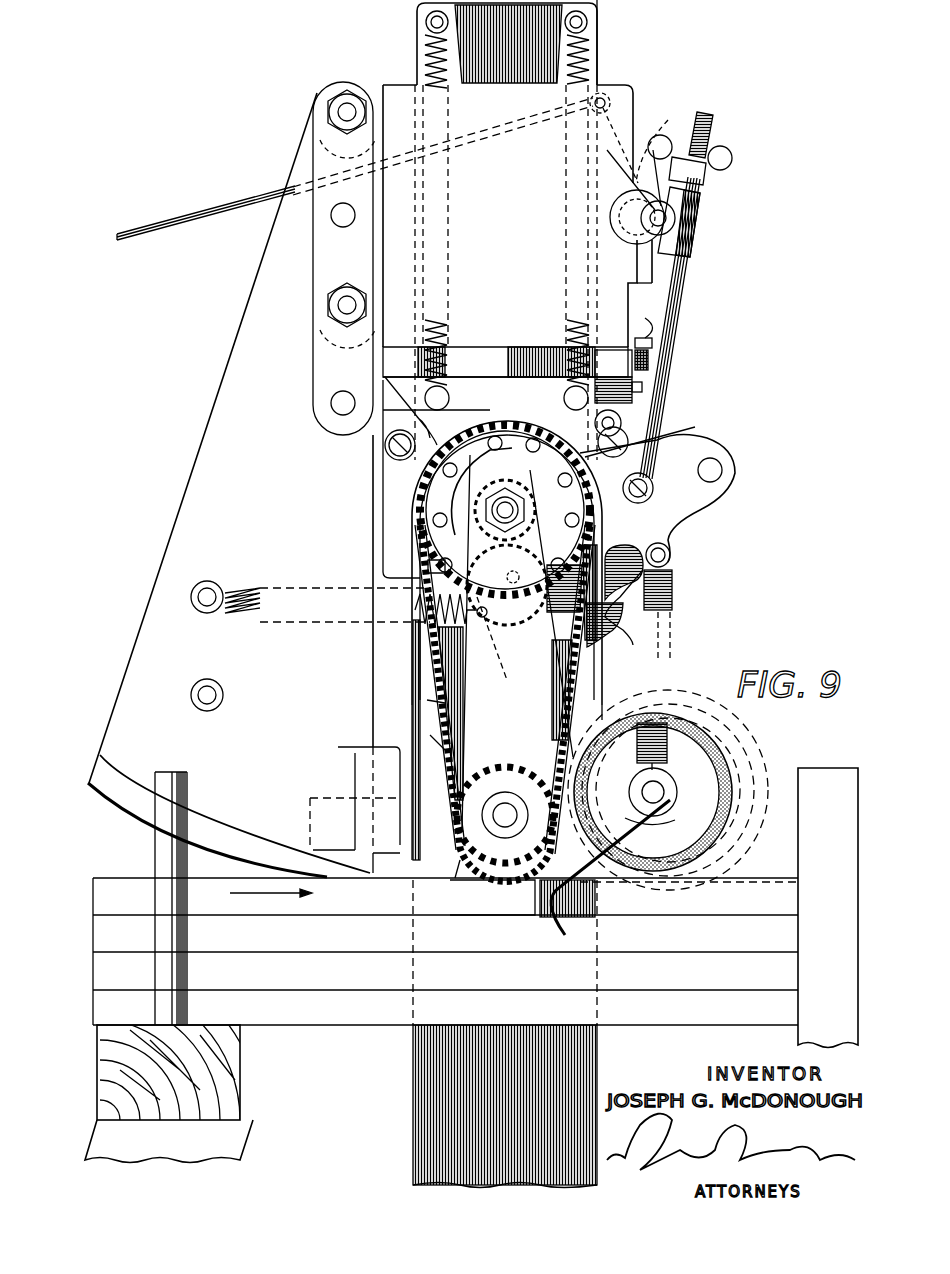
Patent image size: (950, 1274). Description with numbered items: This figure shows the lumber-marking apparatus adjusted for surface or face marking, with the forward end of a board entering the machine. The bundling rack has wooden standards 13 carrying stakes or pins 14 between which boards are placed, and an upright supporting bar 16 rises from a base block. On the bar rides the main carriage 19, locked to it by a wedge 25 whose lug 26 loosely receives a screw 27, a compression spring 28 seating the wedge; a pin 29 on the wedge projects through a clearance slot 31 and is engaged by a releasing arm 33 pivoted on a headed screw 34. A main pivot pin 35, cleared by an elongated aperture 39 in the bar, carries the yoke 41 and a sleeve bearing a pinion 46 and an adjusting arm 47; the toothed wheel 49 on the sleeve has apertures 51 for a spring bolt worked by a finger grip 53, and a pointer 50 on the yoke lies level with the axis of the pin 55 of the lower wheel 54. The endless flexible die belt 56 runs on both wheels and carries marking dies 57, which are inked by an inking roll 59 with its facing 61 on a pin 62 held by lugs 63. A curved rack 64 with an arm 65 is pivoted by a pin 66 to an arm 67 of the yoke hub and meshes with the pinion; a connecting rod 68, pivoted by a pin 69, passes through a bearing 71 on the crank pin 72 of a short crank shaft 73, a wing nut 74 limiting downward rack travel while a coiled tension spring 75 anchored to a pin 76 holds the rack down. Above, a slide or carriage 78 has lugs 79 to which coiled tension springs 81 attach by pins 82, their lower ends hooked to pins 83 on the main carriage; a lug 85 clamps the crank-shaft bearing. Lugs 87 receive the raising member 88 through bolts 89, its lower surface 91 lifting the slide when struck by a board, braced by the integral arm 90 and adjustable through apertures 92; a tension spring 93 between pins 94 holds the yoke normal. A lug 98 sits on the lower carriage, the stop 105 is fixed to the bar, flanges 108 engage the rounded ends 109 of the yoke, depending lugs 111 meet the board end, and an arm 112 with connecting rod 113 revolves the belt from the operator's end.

The wooden standards 13 is at (200, 1075).
The stakes or pins 14 is at (170, 850).
The upright supporting bar 16 is at (447, 1117).
The main carriage 19 is at (378, 438).
The wedge 25 is at (612, 385).
The lug 26 is at (643, 386).
The screw 27 is at (655, 321).
The compression spring 28 is at (649, 352).
The pin 29 is at (625, 452).
The clearance slot 31 is at (618, 430).
The releasing arm 33 is at (440, 430).
The headed screw 34 is at (385, 455).
The main pivot pin 35 is at (510, 514).
The elongated aperture 39 is at (500, 377).
The yoke 41 is at (492, 657).
The pinion 46 is at (507, 580).
The adjusting arm 47 is at (510, 472).
The toothed wheel 49 is at (425, 545).
The pointer 50 is at (505, 815).
The apertures 51 is at (440, 540).
The finger grip 53 is at (470, 455).
The wheel 54 is at (462, 830).
The pin 55 is at (505, 828).
The endless flexible die belt 56 is at (437, 688).
The marking dies 57 is at (440, 752).
The inking roll 59 is at (690, 765).
The facing 61 is at (728, 787).
The pin 62 is at (664, 791).
The lugs 63 is at (645, 828).
The rack 64 is at (469, 632).
The arm 65 is at (695, 510).
The pin 66 is at (718, 472).
The arm 67 is at (700, 447).
The connecting rod 68 is at (708, 122).
The pin 69 is at (656, 494).
The bearing 71 is at (700, 240).
The crank pin 72 is at (665, 220).
The crank shaft 73 is at (664, 141).
The wing nut 74 is at (725, 148).
The coiled tension spring 75 is at (675, 593).
The pin 76 is at (670, 560).
The slide or carriage 78 is at (487, 120).
The lugs 79 is at (570, 35).
The coiled tension springs 81 is at (430, 52).
The pins 82 is at (432, 22).
The pins 83 is at (565, 399).
The lug 85 is at (653, 292).
The lugs 87 is at (373, 85).
The raising member 88 is at (188, 490).
The bolts 89 is at (340, 112).
The transversely extending integral arm 90 is at (395, 778).
The lower surface 91 is at (222, 880).
The apertures 92 is at (340, 218).
The tension spring 93 is at (244, 588).
The pins 94 is at (207, 695).
The lug 98 is at (632, 643).
The stop 105 is at (828, 770).
The upright lugs or flanges 108 is at (400, 870).
The rounded ends 109 is at (460, 878).
The depending lugs 111 is at (545, 915).
The arm 112 is at (628, 137).
The connecting rod 113 is at (217, 200).